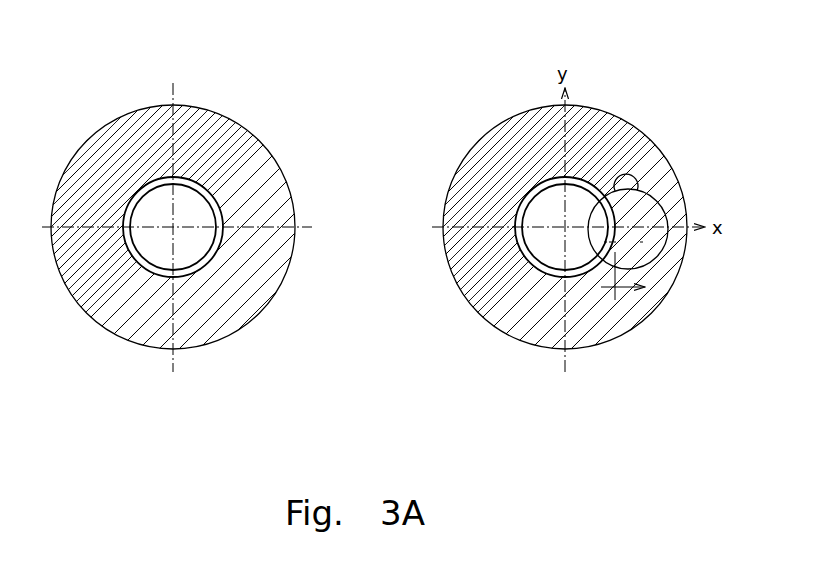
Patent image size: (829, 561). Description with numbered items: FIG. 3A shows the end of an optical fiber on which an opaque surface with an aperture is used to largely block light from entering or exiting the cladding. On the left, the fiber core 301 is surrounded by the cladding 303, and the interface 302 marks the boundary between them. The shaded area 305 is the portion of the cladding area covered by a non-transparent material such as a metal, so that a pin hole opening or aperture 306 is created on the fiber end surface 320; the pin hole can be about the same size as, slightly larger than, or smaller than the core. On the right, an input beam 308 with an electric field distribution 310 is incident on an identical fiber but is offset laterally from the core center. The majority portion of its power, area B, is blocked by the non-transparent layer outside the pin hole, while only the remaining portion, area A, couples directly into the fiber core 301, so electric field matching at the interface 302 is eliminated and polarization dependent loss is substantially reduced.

The fiber core 301 is at (157, 243).
The interface of fiber core and cladding 302 is at (194, 189).
The cladding 303 is at (242, 293).
The shaded area 305 is at (262, 161).
The pin hole opening or aperture 306 is at (193, 278).
The input beam 308 is at (671, 238).
The electric field distribution 310 is at (632, 174).
The fiber end surface 320 is at (186, 61).